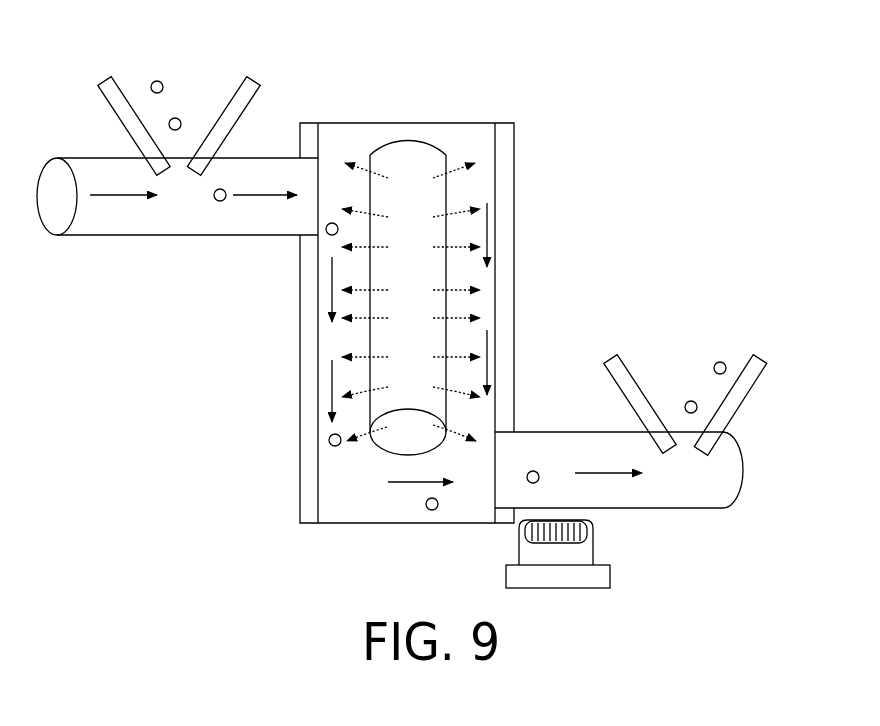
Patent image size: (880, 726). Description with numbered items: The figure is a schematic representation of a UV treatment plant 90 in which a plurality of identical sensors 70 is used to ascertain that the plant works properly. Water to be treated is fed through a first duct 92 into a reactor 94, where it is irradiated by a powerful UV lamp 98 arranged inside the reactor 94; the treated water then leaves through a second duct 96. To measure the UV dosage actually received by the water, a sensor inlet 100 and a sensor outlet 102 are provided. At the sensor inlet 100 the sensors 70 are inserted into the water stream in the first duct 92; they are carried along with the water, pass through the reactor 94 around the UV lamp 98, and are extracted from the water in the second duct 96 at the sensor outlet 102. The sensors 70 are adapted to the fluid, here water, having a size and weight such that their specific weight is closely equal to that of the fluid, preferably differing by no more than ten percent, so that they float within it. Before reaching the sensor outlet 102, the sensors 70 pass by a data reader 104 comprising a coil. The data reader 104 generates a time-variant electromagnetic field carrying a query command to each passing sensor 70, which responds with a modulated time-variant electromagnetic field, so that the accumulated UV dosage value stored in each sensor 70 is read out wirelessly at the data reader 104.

The UV treatment plant 90 is at (550, 102).
The first duct 92 is at (148, 237).
The reactor 94 is at (510, 208).
The second duct 96 is at (563, 440).
The UV lamp 98 is at (402, 145).
The sensor inlet 100 is at (110, 107).
The sensor outlet 102 is at (743, 393).
The data reader 104 is at (600, 577).
The sensor 70 is at (178, 118).